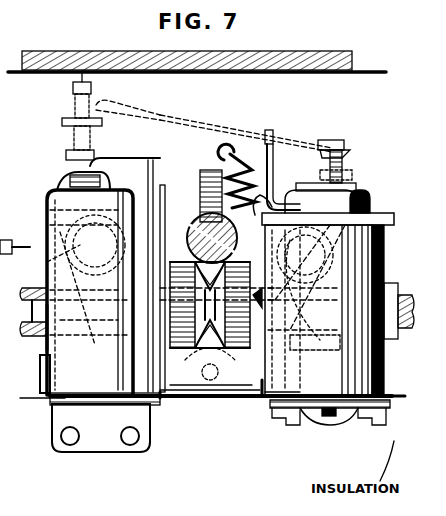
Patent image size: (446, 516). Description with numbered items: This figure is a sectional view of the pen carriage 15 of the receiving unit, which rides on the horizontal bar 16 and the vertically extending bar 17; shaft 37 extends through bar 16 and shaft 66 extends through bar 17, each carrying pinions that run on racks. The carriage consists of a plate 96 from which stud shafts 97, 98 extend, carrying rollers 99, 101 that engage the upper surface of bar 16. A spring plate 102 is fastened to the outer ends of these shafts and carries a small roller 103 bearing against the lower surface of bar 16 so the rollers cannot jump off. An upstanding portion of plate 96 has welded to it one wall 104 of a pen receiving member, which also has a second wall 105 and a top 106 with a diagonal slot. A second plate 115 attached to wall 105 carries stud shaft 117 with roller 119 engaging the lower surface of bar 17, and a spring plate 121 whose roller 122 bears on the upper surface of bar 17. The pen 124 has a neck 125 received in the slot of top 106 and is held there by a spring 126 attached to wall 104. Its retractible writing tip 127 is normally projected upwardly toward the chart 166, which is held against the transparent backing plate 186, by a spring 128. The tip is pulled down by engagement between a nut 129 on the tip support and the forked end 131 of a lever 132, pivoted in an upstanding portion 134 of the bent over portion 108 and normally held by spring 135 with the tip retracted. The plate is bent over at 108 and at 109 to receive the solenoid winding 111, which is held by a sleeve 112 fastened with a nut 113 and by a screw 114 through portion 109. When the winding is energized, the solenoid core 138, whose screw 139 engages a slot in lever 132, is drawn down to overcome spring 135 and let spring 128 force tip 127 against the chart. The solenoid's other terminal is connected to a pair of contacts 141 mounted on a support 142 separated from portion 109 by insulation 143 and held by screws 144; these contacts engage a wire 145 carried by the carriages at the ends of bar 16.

The backing plate 186 is at (279, 52).
The chart 166 is at (367, 73).
The spring 128 is at (46, 204).
The spring plate 102 is at (97, 335).
The neck 125 is at (60, 175).
The nut 129 is at (66, 153).
The writing tip 127 is at (62, 122).
The forked end 131 is at (96, 154).
The lever 132 is at (152, 156).
The top 106 is at (116, 187).
The second plate 115 is at (163, 185).
The roller 99 is at (47, 224).
The stud shaft 97 is at (47, 264).
The shaft 37 is at (22, 288).
The bar 16 is at (42, 332).
The pen 124 is at (42, 359).
The spring 126 is at (50, 402).
The wall 104 is at (122, 409).
The roller 122 is at (200, 186).
The spring 135 is at (256, 123).
The upstanding portion 134 is at (268, 126).
The spring plate 121 is at (274, 169).
The shaft 66 is at (190, 229).
The bar 17 is at (196, 226).
The stud shaft 117 is at (266, 304).
The roller 119 is at (232, 364).
The pen carriage 15 is at (252, 435).
The wire 145 is at (198, 399).
The plate 96 is at (186, 383).
The second wall 105 is at (160, 401).
The small roller 103 is at (218, 389).
The bent over portion 109 is at (258, 402).
The roller 101 is at (384, 246).
The stud shaft 98 is at (378, 220).
The bent over portion 108 is at (365, 206).
The nut 113 is at (354, 186).
The sleeve 112 is at (344, 177).
The screw 139 is at (330, 144).
The solenoid core 138 is at (390, 339).
The solenoid winding 111 is at (380, 374).
The insulation 143 is at (382, 407).
The screws 144 is at (280, 424).
The support 142 is at (316, 417).
The screw 114 is at (330, 416).
The contacts 141 is at (344, 419).